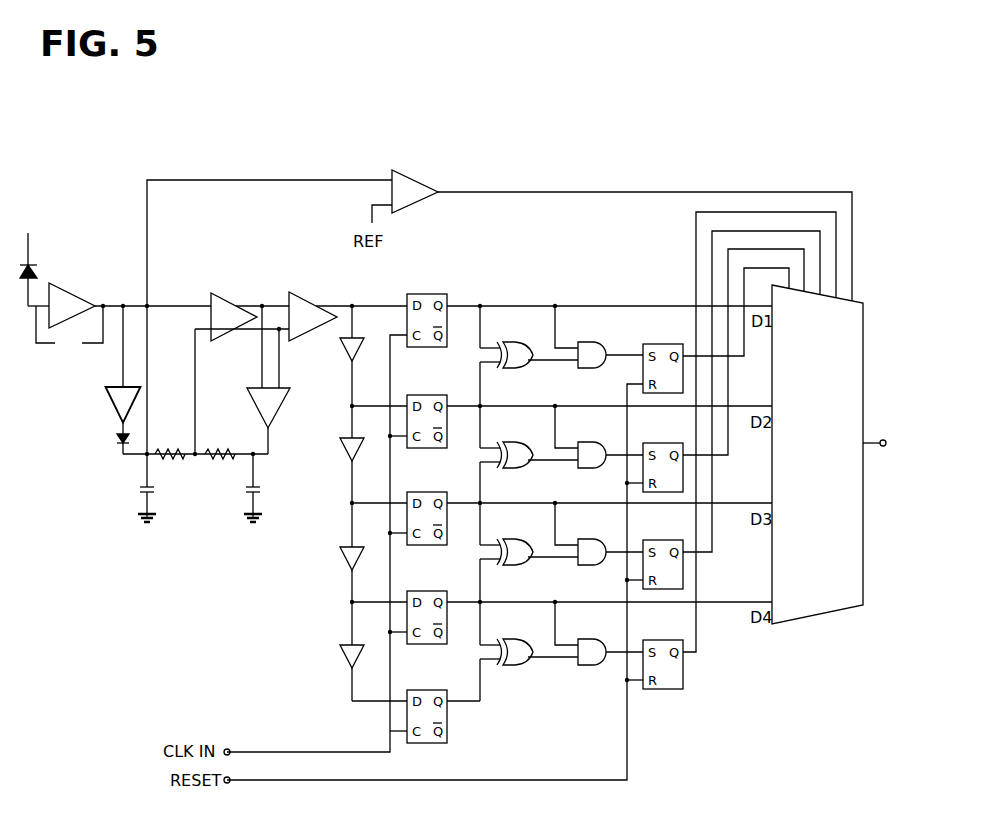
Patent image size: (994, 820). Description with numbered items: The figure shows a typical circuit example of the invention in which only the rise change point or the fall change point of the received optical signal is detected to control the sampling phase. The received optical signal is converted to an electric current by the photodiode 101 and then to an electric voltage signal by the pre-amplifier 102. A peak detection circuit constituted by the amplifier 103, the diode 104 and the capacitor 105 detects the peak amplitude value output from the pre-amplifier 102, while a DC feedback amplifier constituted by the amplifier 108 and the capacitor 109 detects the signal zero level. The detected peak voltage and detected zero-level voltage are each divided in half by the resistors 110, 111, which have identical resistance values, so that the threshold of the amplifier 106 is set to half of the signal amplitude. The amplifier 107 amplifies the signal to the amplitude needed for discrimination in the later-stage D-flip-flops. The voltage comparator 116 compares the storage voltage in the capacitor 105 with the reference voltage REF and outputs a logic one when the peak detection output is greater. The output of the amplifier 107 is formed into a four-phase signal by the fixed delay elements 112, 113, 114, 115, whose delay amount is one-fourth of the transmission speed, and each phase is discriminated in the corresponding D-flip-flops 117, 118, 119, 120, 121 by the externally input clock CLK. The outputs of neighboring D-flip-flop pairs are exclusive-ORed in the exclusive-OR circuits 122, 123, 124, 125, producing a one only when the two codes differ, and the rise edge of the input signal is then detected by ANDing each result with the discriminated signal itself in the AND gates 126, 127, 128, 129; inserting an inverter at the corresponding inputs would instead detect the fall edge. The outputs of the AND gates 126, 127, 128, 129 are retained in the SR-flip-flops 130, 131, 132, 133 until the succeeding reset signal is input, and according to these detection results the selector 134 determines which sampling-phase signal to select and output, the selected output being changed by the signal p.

The photodiode 101 is at (46, 265).
The pre-amplifier 102 is at (72, 305).
The amplifier 103 is at (109, 405).
The diode 104 is at (104, 445).
The capacitor 105 is at (130, 500).
The amplifier 106 is at (234, 307).
The amplifier 107 is at (313, 307).
The amplifier 108 is at (284, 409).
The capacitor 109 is at (273, 500).
The resistor 110 is at (173, 466).
The resistor 111 is at (222, 468).
The fixed delay element 112 is at (340, 356).
The fixed delay element 113 is at (340, 455).
The fixed delay element 114 is at (338, 564).
The fixed delay element 115 is at (336, 661).
The voltage comparator 116 is at (415, 201).
The D-flip-flop 117 is at (427, 331).
The D-flip-flop 118 is at (427, 431).
The D-flip-flop 119 is at (427, 529).
The D-flip-flop 120 is at (427, 627).
The D-flip-flop 121 is at (427, 725).
The exclusive-OR circuit 122 is at (507, 369).
The exclusive-OR circuit 123 is at (507, 468).
The exclusive-OR circuit 124 is at (507, 566).
The exclusive-OR circuit 125 is at (507, 665).
The AND gate 126 is at (595, 369).
The AND gate 127 is at (595, 467).
The AND gate 128 is at (595, 564).
The AND gate 129 is at (595, 665).
The SR-flip-flop 130 is at (663, 358).
The SR-flip-flop 131 is at (663, 457).
The SR-flip-flop 132 is at (663, 554).
The SR-flip-flop 133 is at (663, 654).
The selector 134 is at (817, 466).